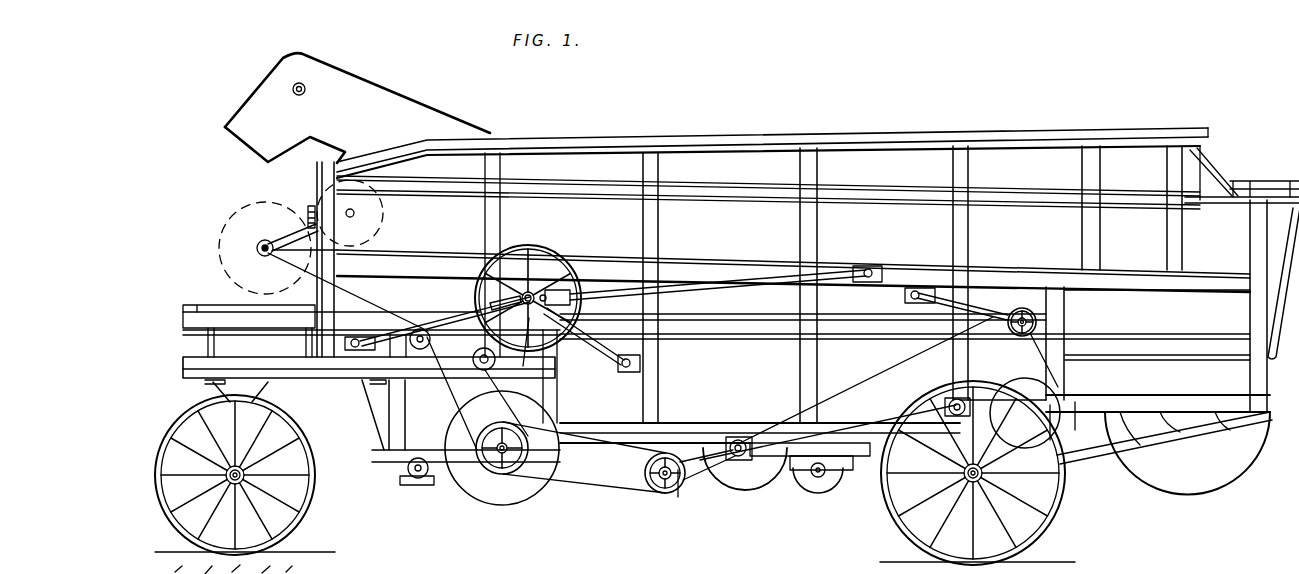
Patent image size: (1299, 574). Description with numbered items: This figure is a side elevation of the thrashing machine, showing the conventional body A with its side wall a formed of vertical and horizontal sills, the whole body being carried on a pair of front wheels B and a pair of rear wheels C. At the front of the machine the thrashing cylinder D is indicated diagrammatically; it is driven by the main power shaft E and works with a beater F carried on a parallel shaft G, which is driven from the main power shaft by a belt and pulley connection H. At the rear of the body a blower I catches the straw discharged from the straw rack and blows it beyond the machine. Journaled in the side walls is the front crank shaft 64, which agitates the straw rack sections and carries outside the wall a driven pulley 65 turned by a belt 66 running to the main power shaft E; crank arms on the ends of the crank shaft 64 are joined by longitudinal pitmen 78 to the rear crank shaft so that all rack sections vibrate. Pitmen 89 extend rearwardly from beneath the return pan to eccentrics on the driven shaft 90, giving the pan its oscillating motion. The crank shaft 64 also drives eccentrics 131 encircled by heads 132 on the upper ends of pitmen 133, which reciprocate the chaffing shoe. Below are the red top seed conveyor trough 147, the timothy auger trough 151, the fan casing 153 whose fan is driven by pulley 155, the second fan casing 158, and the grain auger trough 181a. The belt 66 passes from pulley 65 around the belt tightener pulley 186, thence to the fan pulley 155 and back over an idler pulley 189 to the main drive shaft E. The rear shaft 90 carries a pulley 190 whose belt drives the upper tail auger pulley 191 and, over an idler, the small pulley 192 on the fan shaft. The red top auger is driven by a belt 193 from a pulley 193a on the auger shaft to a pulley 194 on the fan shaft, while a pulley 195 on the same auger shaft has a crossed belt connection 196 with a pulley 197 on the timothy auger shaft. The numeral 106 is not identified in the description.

The body A is at (921, 134).
The side wall a is at (897, 235).
The front wheels B is at (303, 526).
The rear wheels C is at (1060, 513).
The thrashing cylinder D is at (233, 220).
The main power shaft E is at (265, 242).
The beater F is at (385, 211).
The beater shaft G is at (353, 214).
The belt and pulley connection H is at (302, 207).
The blower I is at (1187, 453).
The crank shaft 64 is at (540, 280).
The driven pulley 65 is at (572, 290).
The belt 66 is at (437, 248).
The pitmen 78 is at (717, 288).
The pitmen 89 is at (970, 317).
The driven shaft 90 is at (1003, 342).
The lever 106 is at (427, 330).
The eccentrics 131 is at (530, 353).
The heads 132 is at (530, 312).
The pitmen 133 is at (595, 347).
The conveyor trough 147 is at (650, 494).
The trough 151 is at (403, 488).
The fan casing 153 is at (495, 503).
The pulley 155 is at (483, 477).
The second fan casing 158 is at (762, 492).
The trough 181a is at (823, 488).
The belt tightener pulley 186 is at (471, 365).
The idler pulley 189 is at (415, 349).
The pulley 190 is at (1044, 314).
The pulley 191 is at (1017, 386).
The small pulley 192 is at (730, 458).
The belt 193 is at (687, 490).
The pulley 193a is at (678, 498).
The pulley 194 is at (757, 439).
The pulley 195 is at (675, 447).
The crossed belt connection 196 is at (615, 480).
The pulley 197 is at (412, 478).